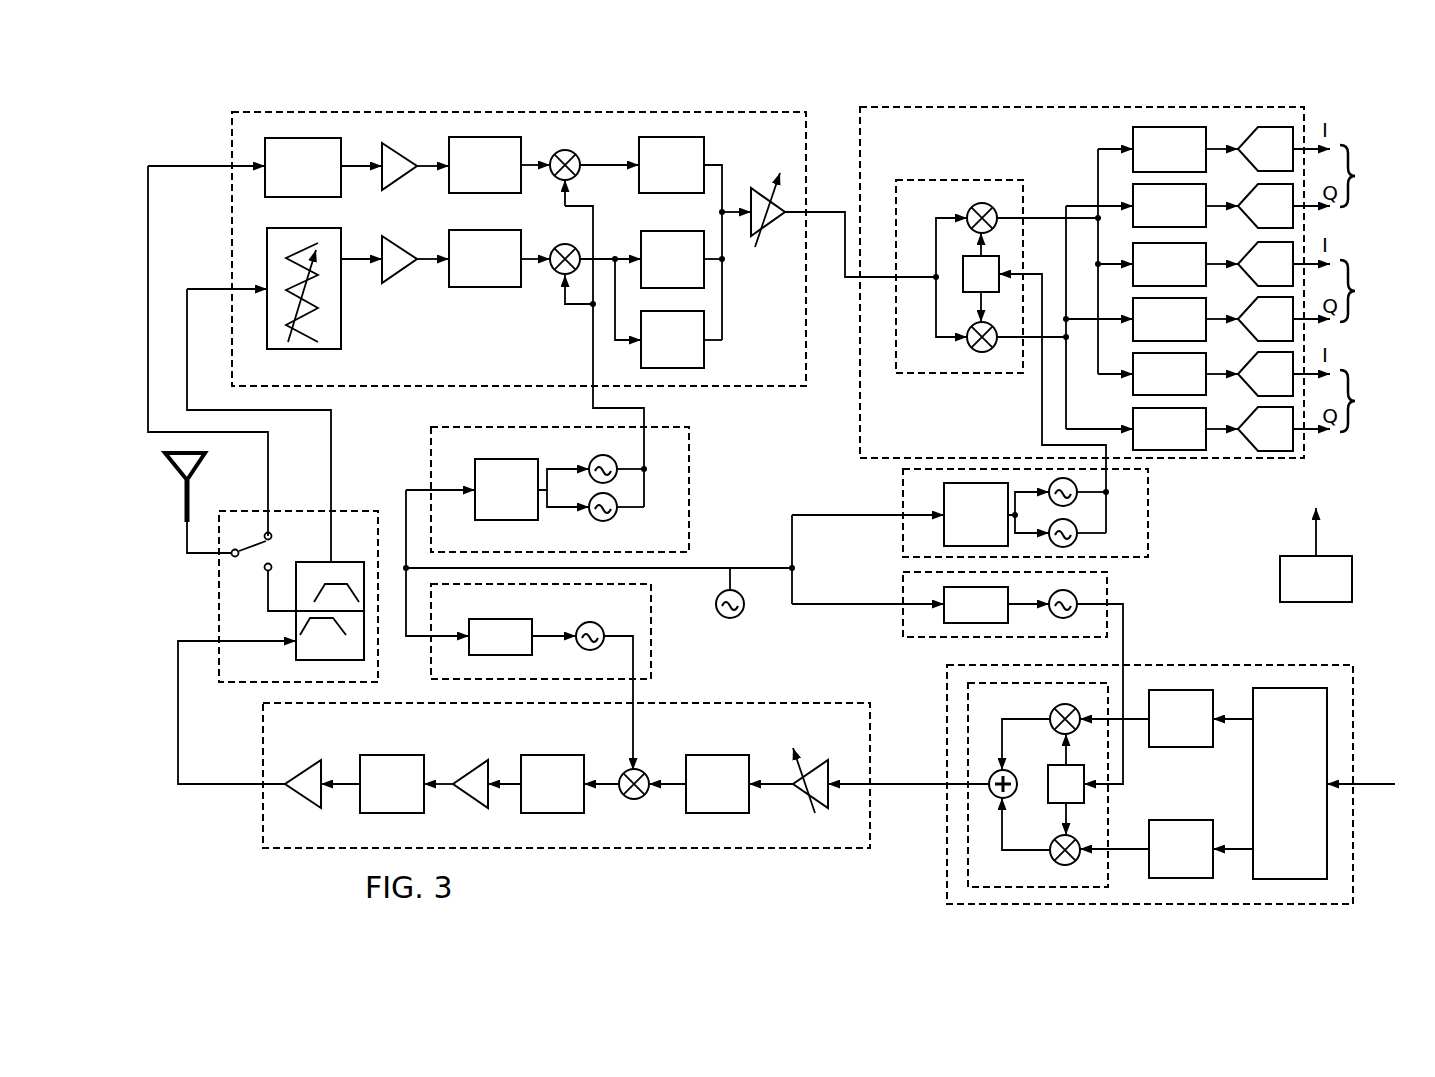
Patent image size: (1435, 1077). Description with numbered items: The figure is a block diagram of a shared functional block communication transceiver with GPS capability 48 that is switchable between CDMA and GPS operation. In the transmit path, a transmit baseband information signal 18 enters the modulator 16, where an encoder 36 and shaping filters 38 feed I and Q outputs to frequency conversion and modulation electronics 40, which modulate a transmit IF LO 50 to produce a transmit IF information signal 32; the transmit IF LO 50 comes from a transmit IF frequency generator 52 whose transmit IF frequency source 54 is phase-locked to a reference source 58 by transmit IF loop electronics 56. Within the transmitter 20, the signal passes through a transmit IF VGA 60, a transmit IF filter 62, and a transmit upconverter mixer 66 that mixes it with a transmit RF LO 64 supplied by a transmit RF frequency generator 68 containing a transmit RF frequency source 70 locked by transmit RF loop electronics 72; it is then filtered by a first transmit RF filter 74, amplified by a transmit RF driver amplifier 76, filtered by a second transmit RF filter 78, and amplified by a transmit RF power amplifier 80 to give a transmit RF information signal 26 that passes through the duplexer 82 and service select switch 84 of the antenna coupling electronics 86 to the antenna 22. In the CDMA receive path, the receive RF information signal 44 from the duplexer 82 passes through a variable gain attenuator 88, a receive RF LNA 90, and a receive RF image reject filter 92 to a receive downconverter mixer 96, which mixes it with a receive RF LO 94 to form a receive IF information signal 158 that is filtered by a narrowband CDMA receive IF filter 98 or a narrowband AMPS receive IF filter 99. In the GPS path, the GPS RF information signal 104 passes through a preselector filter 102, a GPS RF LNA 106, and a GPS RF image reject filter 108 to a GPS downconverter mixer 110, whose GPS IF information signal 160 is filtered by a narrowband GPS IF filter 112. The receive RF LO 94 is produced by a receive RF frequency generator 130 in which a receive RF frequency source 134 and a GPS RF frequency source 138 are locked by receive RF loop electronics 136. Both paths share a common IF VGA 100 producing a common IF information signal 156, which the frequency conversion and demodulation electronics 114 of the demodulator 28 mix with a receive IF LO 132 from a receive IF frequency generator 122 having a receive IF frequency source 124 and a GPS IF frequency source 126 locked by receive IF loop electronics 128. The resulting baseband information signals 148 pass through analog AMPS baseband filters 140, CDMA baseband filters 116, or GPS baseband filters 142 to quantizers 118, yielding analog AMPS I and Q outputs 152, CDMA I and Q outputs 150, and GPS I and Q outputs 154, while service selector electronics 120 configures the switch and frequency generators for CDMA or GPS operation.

The modulator 16 is at (1150, 784).
The transmit baseband information signal 18 is at (1361, 797).
The transmitter 20 is at (566, 775).
The antenna 22 is at (190, 496).
The transmit RF information signal 26 is at (180, 736).
The demodulator 28 is at (1082, 282).
The transmit IF information signal 32 is at (927, 782).
The encoder 36 is at (1270, 783).
The shaping filters 38 is at (1146, 784).
The frequency conversion and modulation electronics 40 is at (1038, 785).
The receive RF information signal 44 is at (257, 411).
The communication transceiver with GPS capability 48 is at (222, 808).
The transmit IF LO 50 is at (1125, 612).
The transmit IF frequency generator 52 is at (1005, 604).
The transmit IF frequency source 54 is at (1080, 594).
The transmit IF loop electronics 56 is at (920, 605).
The reference source 58 is at (597, 606).
The transmit IF variable gain amplifier 60 is at (815, 762).
The transmit IF filter 62 is at (699, 784).
The transmit RF LO 64 is at (636, 691).
The transmit upconverter mixer 66 is at (626, 771).
The transmit RF frequency generator 68 is at (541, 631).
The transmit RF frequency source 70 is at (591, 621).
The transmit RF loop electronics 72 is at (491, 572).
The first transmit RF filter 74 is at (536, 784).
The transmit RF driver amplifier 76 is at (486, 760).
The second transmit RF filter 78 is at (372, 784).
The transmit RF power amplifier 80 is at (304, 766).
The duplexer 82 is at (326, 598).
The service select switch 84 is at (250, 552).
The antenna coupling electronics 86 is at (298, 596).
The variable gain attenuator 88 is at (325, 228).
The receive RF low noise amplifier 90 is at (386, 285).
The receive RF image reject filter 92 is at (499, 258).
The receive RF LO 94 is at (645, 408).
The receive downconverter mixer 96 is at (553, 272).
The narrowband CDMA receive IF filter 98 is at (681, 259).
The narrowband AMPS receive IF filter 99 is at (681, 339).
The common IF VGA 100 is at (768, 226).
The preselector filter 102 is at (323, 167).
The GPS RF information signal 104 is at (208, 332).
The GPS RF LNA 106 is at (386, 192).
The GPS RF image reject filter 108 is at (499, 165).
The GPS downconverter mixer 110 is at (555, 182).
The narrowband GPS IF filter 112 is at (695, 238).
The frequency conversion and demodulation electronics 114 is at (959, 276).
The CDMA baseband filters 116 is at (1152, 292).
The quantizers 118 is at (1284, 289).
The service selector electronics 120 is at (1316, 555).
The receive IF frequency generator 122 is at (1025, 513).
The receive IF frequency source 124 is at (1078, 490).
The GPS IF frequency source 126 is at (1078, 528).
The receive IF loop electronics 128 is at (920, 514).
The receive RF frequency generator 130 is at (560, 489).
The receive IF LO 132 is at (1042, 445).
The receive RF frequency source 134 is at (599, 456).
The receive RF loop electronics 136 is at (497, 489).
The GPS RF frequency source 138 is at (599, 520).
The analog AMPS baseband filters 140 is at (1152, 177).
The GPS baseband filters 142 is at (1152, 401).
The baseband information signals 148 is at (1048, 216).
The CDMA I and Q outputs 150 is at (1369, 291).
The analog AMPS I and Q outputs 152 is at (1369, 176).
The GPS I and Q outputs 154 is at (1369, 401).
The common IF information signal 156 is at (840, 251).
The receive IF information signal 158 is at (601, 258).
The GPS IF information signal 160 is at (607, 166).